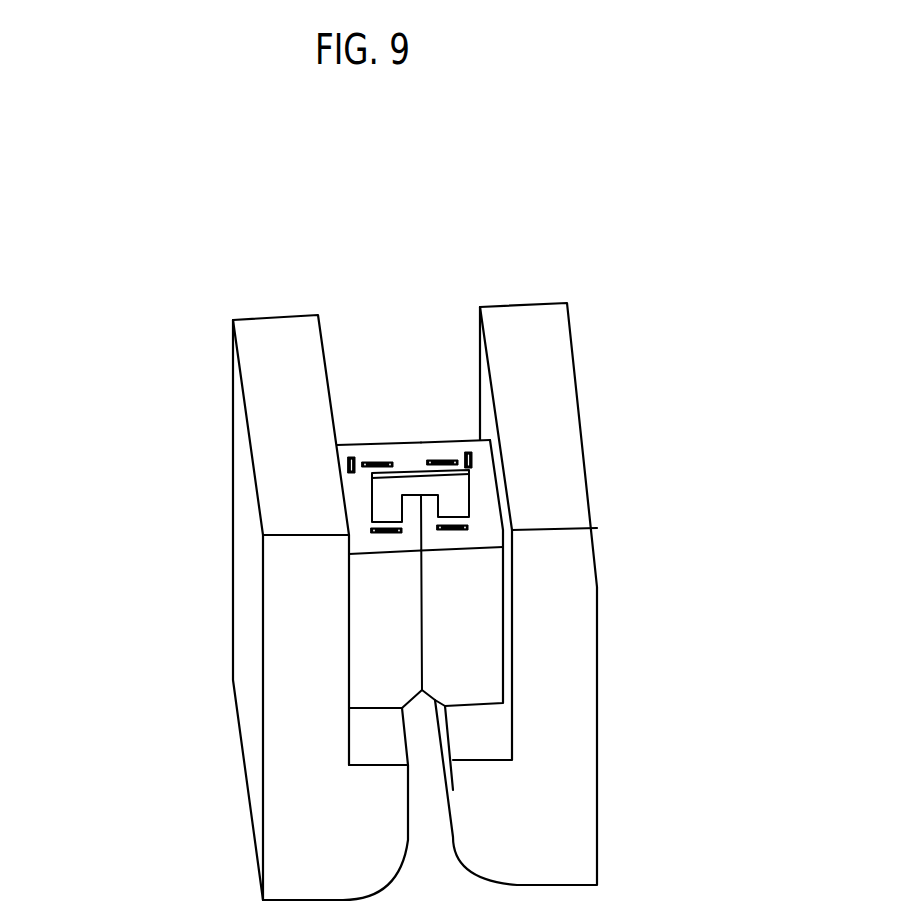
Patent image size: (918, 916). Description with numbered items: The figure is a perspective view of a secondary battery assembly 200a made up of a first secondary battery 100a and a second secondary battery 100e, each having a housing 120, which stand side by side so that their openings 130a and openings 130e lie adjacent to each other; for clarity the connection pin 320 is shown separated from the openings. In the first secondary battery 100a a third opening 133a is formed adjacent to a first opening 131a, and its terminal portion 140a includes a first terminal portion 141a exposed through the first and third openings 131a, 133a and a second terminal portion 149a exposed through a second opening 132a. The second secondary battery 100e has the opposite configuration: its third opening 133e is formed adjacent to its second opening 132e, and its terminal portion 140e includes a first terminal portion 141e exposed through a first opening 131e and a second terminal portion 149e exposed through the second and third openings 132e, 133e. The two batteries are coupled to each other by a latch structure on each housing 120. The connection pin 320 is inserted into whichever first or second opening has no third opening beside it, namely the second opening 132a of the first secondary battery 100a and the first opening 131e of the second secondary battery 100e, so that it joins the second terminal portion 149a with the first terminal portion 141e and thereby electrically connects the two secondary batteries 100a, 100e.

The secondary battery assembly 200a is at (115, 194).
The first secondary battery 100a is at (212, 344).
The second secondary battery 100e is at (596, 346).
The housing 120 is at (254, 748).
The openings 130a is at (146, 507).
The first opening 131a is at (352, 478).
The second opening 132a is at (382, 547).
The third opening 133a is at (337, 469).
The openings 130e is at (696, 487).
The first opening 131e is at (466, 550).
The second opening 132e is at (466, 470).
The third opening 133e is at (458, 524).
The terminal portion 140a is at (436, 377).
The first terminal portion 141a is at (350, 456).
The second terminal portion 149a is at (387, 527).
The terminal portion 140e is at (676, 385).
The first terminal portion 141e is at (487, 457).
The second terminal portion 149e is at (431, 461).
The connection pin 320 is at (427, 485).